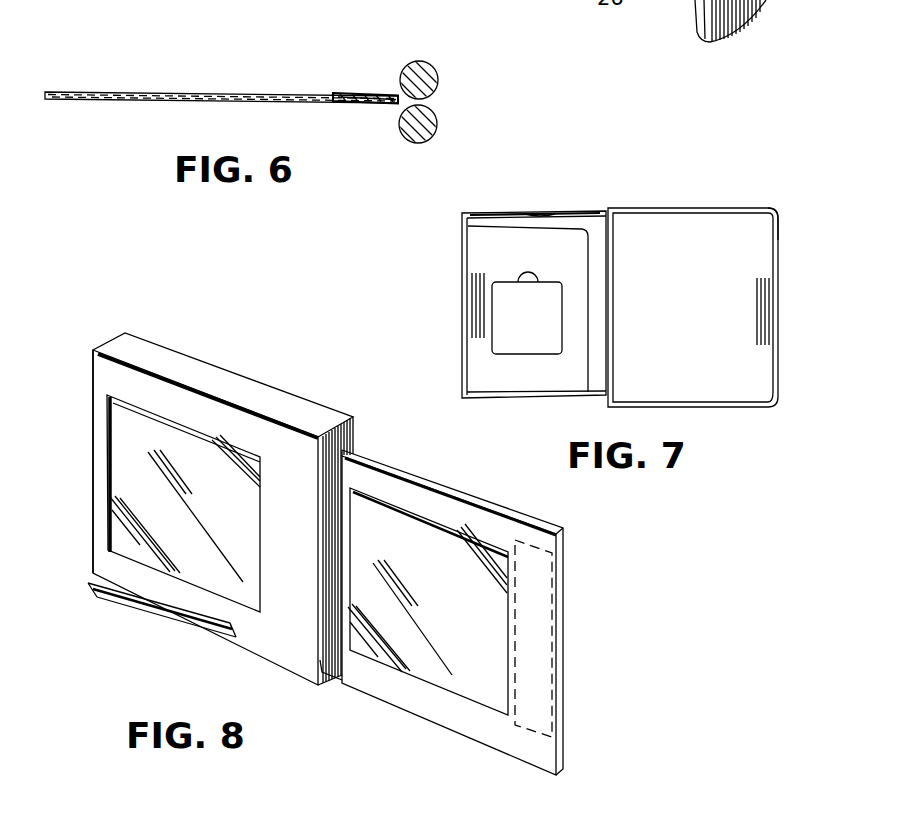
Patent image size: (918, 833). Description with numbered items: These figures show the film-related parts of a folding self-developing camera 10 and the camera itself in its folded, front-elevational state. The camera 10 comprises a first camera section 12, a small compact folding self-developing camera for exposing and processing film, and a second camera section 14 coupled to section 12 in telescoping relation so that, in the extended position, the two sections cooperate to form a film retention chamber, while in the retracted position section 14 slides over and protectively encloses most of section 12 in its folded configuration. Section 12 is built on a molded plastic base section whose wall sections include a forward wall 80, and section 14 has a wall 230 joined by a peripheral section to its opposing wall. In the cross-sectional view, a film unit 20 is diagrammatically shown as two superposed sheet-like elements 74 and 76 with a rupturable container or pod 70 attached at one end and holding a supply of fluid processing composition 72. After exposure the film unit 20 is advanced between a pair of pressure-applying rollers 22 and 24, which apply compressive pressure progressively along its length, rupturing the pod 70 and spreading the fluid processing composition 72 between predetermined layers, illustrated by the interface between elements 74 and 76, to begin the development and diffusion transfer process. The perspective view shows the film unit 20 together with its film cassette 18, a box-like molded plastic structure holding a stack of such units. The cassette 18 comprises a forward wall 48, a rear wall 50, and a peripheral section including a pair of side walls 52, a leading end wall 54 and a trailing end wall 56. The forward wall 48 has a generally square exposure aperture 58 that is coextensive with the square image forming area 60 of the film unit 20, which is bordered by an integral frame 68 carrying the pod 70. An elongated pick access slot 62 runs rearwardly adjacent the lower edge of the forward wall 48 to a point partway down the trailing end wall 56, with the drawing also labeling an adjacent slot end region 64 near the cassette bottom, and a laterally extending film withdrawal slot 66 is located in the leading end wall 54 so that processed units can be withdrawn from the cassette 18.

In FIG. 7, the camera 10 is at (624, 298).
In FIG. 7, the first camera section 12 is at (457, 263).
In FIG. 7, the second camera section 14 is at (728, 387).
In FIG. 8, the film cassette 18 is at (133, 617).
In FIG. 6, the film unit 20 is at (107, 74).
In FIG. 8, the film unit 20 is at (472, 622).
In FIG. 6, the pressure-applying roller 22 is at (431, 66).
In FIG. 6, the pressure-applying roller 24 is at (438, 118).
In FIG. 8, the forward wall 48 is at (216, 500).
In FIG. 8, the rear wall 50 is at (181, 348).
In FIG. 8, the side walls 52 is at (270, 402).
In FIG. 8, the leading end wall 54 is at (348, 441).
In FIG. 8, the trailing end wall 56 is at (100, 347).
In FIG. 8, the exposure aperture 58 is at (238, 519).
In FIG. 8, the image forming area 60 is at (199, 480).
In FIG. 8, the pick access slot 62 is at (95, 592).
In FIG. 8, the channel end 64 is at (227, 632).
In FIG. 8, the film withdrawal slot 66 is at (322, 668).
In FIG. 8, the integral frame 68 is at (503, 742).
In FIG. 6, the rupturable container or pod 70 is at (370, 93).
In FIG. 8, the rupturable container or pod 70 is at (540, 622).
In FIG. 6, the fluid processing composition 72 is at (375, 106).
In FIG. 6, the sheet-like element 74 is at (197, 92).
In FIG. 6, the sheet-like element 76 is at (262, 100).
In FIG. 7, the forward wall 80 is at (588, 209).
In FIG. 7, the wall 230 is at (777, 231).